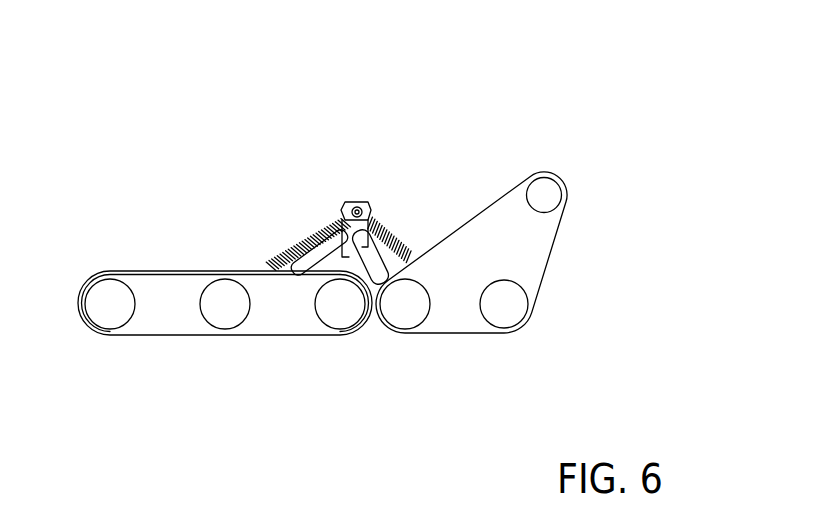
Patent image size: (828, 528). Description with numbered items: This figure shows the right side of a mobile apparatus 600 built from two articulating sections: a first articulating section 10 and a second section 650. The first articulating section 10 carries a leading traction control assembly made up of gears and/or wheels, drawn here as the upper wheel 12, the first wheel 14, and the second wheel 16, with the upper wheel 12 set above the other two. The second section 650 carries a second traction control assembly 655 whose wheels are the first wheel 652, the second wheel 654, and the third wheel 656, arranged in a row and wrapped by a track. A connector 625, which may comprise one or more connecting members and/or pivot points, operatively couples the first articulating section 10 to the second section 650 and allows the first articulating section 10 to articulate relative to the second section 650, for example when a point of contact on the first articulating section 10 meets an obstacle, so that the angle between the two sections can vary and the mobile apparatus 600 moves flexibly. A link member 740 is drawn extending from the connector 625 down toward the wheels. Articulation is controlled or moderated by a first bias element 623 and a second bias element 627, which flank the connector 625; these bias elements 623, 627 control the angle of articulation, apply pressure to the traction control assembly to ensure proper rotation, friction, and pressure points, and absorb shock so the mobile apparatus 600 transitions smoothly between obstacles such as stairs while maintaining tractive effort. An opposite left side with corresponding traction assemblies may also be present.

The mobile apparatus 600 is at (112, 114).
The second section 650 is at (199, 242).
The second traction control assembly 655 is at (110, 271).
The third wheel 656 is at (105, 335).
The second wheel 654 is at (223, 335).
The first wheel 652 is at (335, 332).
The connector 625 is at (355, 198).
The second bias element 627 is at (302, 236).
The first bias element 623 is at (400, 238).
The link arm 740 is at (368, 310).
The first articulating section 10 is at (486, 187).
The upper wheel 12 is at (566, 200).
The first wheel 14 is at (534, 313).
The second wheel 16 is at (407, 333).